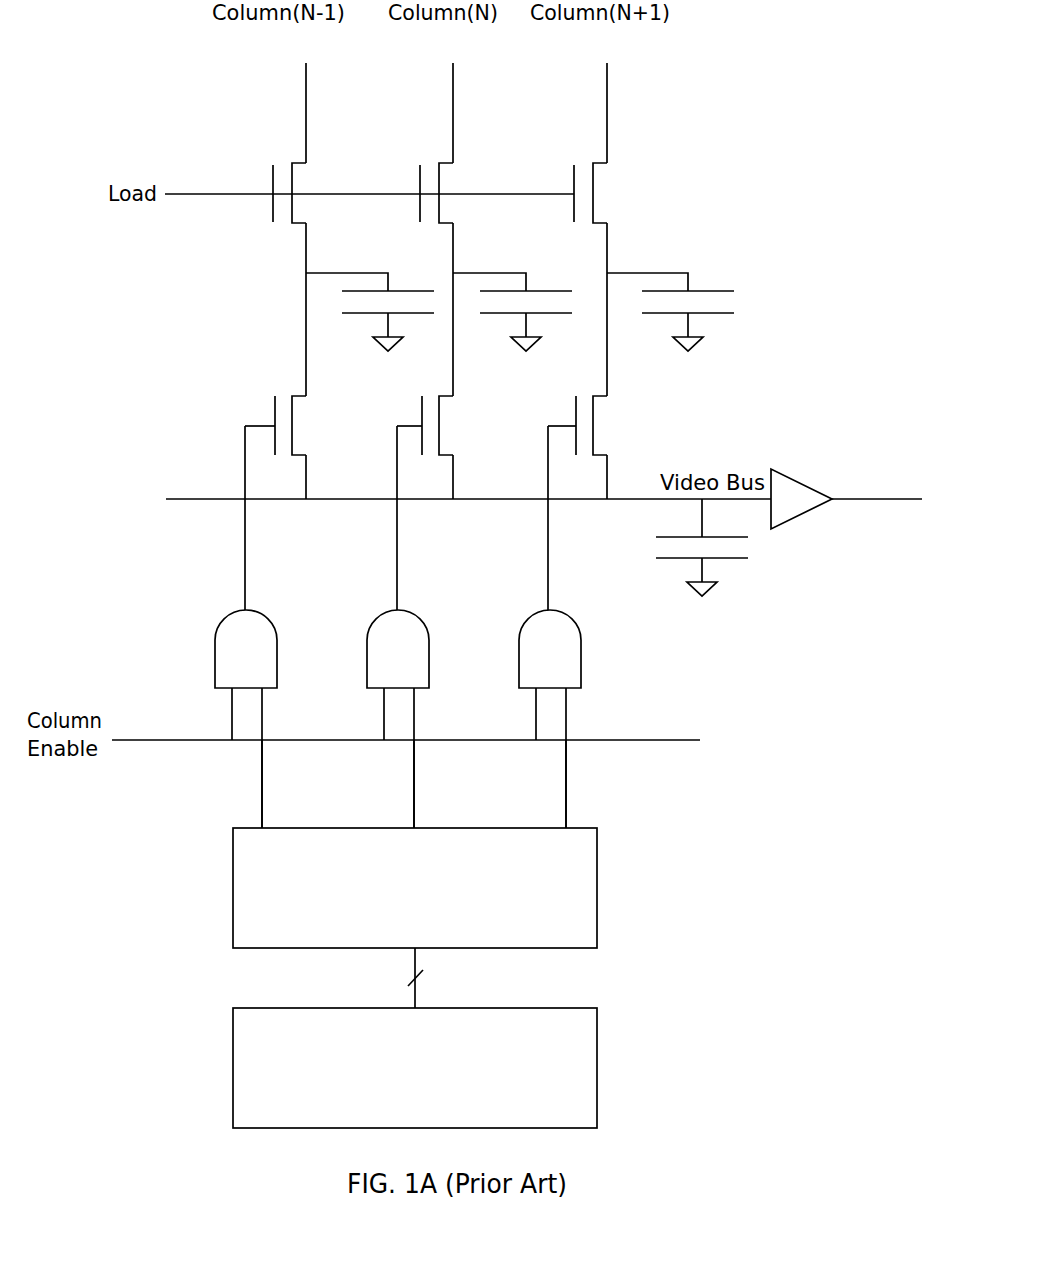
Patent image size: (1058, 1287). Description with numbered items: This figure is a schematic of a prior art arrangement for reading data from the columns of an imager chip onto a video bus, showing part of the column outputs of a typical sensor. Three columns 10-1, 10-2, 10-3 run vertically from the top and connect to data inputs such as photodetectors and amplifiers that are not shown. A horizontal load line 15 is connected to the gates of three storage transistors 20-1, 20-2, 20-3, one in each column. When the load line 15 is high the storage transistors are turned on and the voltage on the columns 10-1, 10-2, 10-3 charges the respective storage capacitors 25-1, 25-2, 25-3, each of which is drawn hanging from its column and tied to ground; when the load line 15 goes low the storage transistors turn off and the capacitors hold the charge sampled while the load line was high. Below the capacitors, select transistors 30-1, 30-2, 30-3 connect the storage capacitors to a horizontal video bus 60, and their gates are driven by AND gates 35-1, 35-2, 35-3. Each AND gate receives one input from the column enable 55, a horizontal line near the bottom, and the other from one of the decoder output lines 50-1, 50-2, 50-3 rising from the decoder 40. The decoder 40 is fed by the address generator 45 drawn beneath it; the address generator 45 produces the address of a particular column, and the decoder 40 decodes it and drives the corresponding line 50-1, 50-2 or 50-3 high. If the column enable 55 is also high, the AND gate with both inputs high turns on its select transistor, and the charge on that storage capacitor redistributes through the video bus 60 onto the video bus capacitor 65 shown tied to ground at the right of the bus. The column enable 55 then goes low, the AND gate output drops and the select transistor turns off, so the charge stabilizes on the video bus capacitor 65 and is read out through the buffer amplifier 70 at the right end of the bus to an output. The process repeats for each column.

The column 10-1 is at (306, 80).
The column 10-2 is at (453, 80).
The column 10-3 is at (607, 80).
The load line 15 is at (185, 197).
The storage transistor 20-1 is at (307, 163).
The storage transistor 20-2 is at (454, 163).
The storage transistor 20-3 is at (608, 163).
The storage capacitor 25-1 is at (417, 250).
The storage capacitor 25-2 is at (526, 283).
The storage capacitor 25-3 is at (688, 283).
The select transistor 30-1 is at (275, 405).
The select transistor 30-2 is at (422, 405).
The select transistor 30-3 is at (576, 405).
The AND gate 35-1 is at (280, 636).
The AND gate 35-2 is at (432, 638).
The AND gate 35-3 is at (583, 636).
The decoder 40 is at (599, 853).
The address generator 45 is at (599, 1038).
The line 50-1 is at (263, 793).
The line 50-2 is at (415, 793).
The line 50-3 is at (567, 793).
The column enable 55 is at (127, 741).
The video bus 60 is at (652, 498).
The video bus capacitor 65 is at (732, 562).
The buffer amplifier 70 is at (802, 517).